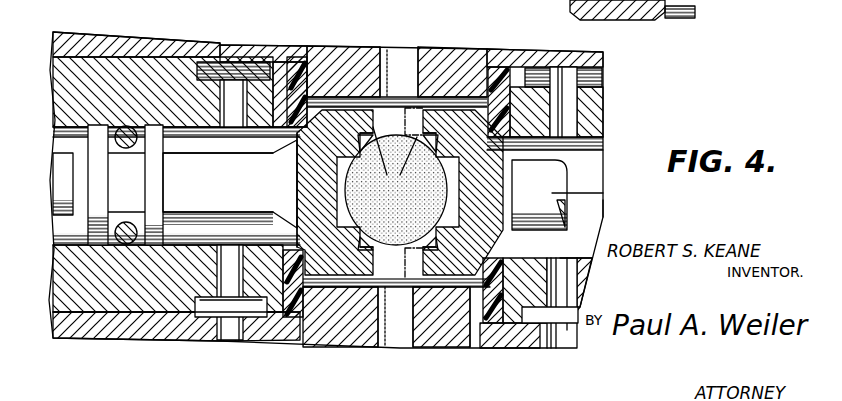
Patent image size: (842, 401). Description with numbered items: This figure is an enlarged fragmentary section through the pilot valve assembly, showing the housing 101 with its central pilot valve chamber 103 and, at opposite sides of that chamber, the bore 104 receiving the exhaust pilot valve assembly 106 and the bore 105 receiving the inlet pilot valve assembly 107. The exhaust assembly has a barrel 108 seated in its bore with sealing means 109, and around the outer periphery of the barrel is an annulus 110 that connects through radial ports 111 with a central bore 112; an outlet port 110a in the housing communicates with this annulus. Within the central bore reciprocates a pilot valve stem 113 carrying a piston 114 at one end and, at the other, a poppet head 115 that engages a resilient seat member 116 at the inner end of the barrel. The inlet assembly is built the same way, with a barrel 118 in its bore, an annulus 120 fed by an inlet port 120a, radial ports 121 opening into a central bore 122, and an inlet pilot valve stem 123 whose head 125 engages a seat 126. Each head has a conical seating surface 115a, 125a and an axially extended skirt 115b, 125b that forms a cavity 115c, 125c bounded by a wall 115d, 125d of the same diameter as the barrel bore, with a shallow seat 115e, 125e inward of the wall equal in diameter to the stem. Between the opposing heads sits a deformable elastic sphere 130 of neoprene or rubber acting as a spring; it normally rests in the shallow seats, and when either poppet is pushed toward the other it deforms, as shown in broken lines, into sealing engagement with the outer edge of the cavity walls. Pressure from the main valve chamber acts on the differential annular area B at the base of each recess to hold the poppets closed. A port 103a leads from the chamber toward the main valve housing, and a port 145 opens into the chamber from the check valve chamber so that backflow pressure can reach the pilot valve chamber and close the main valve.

The housing 101 is at (148, 45).
The central pilot valve chamber 103 is at (467, 285).
The port 103a is at (410, 327).
The bore 104 is at (105, 307).
The bore 105 is at (535, 323).
The exhaust pilot valve assembly 106 is at (173, 307).
The inlet pilot valve assembly 107 is at (615, 102).
The barrel 108 is at (175, 72).
The sealing means 109 is at (118, 128).
The annulus 110 is at (262, 310).
The outlet port 110a is at (220, 290).
The radial ports 111 is at (243, 112).
The central bore 112 is at (207, 245).
The pilot valve stem 113 is at (205, 199).
The piston 114 is at (98, 213).
The head 115 is at (333, 120).
The conical seating surface 115a is at (322, 127).
The axially extended skirt 115b is at (368, 113).
The cavity 115c is at (368, 253).
The wall 115d is at (350, 252).
The shallow seat 115e is at (292, 230).
The seat member 116 is at (298, 58).
The barrel 118 is at (598, 126).
The annulus 120 is at (532, 72).
The inlet port 120a is at (572, 340).
The radial ports 121 is at (568, 125).
The central bore 122 is at (602, 208).
The inlet pilot valve stem 123 is at (603, 193).
The head 125 is at (473, 117).
The conical seating surface 125a is at (484, 117).
The axially extended skirt 125b is at (432, 115).
The cavity 125c is at (428, 240).
The wall 125d is at (433, 253).
The shallow seat 125e is at (455, 175).
The seat 126 is at (500, 300).
The sphere 130 is at (301, 191).
The port 145 is at (395, 62).
The annular area B is at (396, 186).